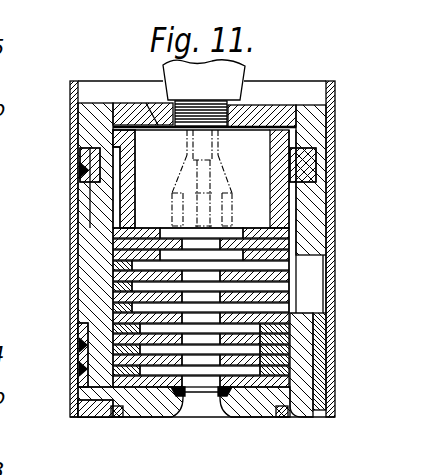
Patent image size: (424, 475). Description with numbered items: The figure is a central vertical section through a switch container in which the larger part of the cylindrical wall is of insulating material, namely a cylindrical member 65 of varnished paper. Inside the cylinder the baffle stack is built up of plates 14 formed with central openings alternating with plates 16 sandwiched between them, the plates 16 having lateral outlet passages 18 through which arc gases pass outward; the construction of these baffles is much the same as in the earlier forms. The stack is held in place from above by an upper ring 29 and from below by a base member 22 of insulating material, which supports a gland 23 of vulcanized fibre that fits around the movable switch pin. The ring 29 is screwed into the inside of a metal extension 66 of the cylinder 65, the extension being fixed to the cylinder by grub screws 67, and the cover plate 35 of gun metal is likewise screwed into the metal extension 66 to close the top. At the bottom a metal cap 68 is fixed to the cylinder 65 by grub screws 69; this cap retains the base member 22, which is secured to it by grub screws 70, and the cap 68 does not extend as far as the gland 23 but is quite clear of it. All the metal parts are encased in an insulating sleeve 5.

The insulating sleeve 5 is at (300, 372).
The plates 14 is at (297, 244).
The plates 16 is at (132, 299).
The lateral outlet passages 18 is at (288, 265).
The base member 22 is at (160, 408).
The gland 23 is at (227, 396).
The upper ring 29 is at (282, 183).
The cover plate 35 is at (272, 108).
The cylindrical member 65 is at (96, 225).
The metal extension 66 is at (108, 131).
The grub screws 67 is at (79, 172).
The metal cap 68 is at (79, 403).
The grub screws 69 is at (72, 338).
The grub screws 70 is at (118, 412).